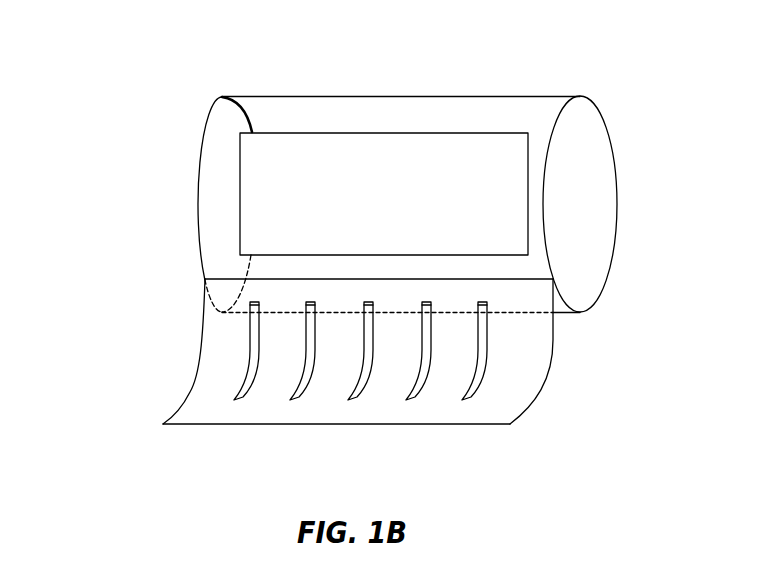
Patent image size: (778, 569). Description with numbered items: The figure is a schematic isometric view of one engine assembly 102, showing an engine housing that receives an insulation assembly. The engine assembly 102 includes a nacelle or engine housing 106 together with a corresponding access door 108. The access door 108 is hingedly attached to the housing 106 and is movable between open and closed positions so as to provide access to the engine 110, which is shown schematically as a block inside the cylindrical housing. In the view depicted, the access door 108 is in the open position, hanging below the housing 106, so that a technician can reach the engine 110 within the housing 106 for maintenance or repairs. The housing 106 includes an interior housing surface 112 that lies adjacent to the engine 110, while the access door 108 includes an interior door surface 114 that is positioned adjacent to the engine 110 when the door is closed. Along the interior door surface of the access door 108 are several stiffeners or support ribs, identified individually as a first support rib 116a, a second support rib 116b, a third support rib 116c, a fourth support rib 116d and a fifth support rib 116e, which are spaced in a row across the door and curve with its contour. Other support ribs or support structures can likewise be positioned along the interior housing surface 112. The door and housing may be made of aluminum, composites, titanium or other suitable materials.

The engine assembly 102 is at (100, 141).
The engine housing 106 is at (590, 160).
The access door 108 is at (546, 368).
The engine 110 is at (293, 154).
The interior housing surface 112 is at (425, 97).
The interior door surface 114 is at (203, 379).
The first support rib 116a is at (245, 387).
The second support rib 116b is at (303, 385).
The third support rib 116c is at (362, 385).
The fourth support rib 116d is at (420, 385).
The fifth support rib 116e is at (475, 385).